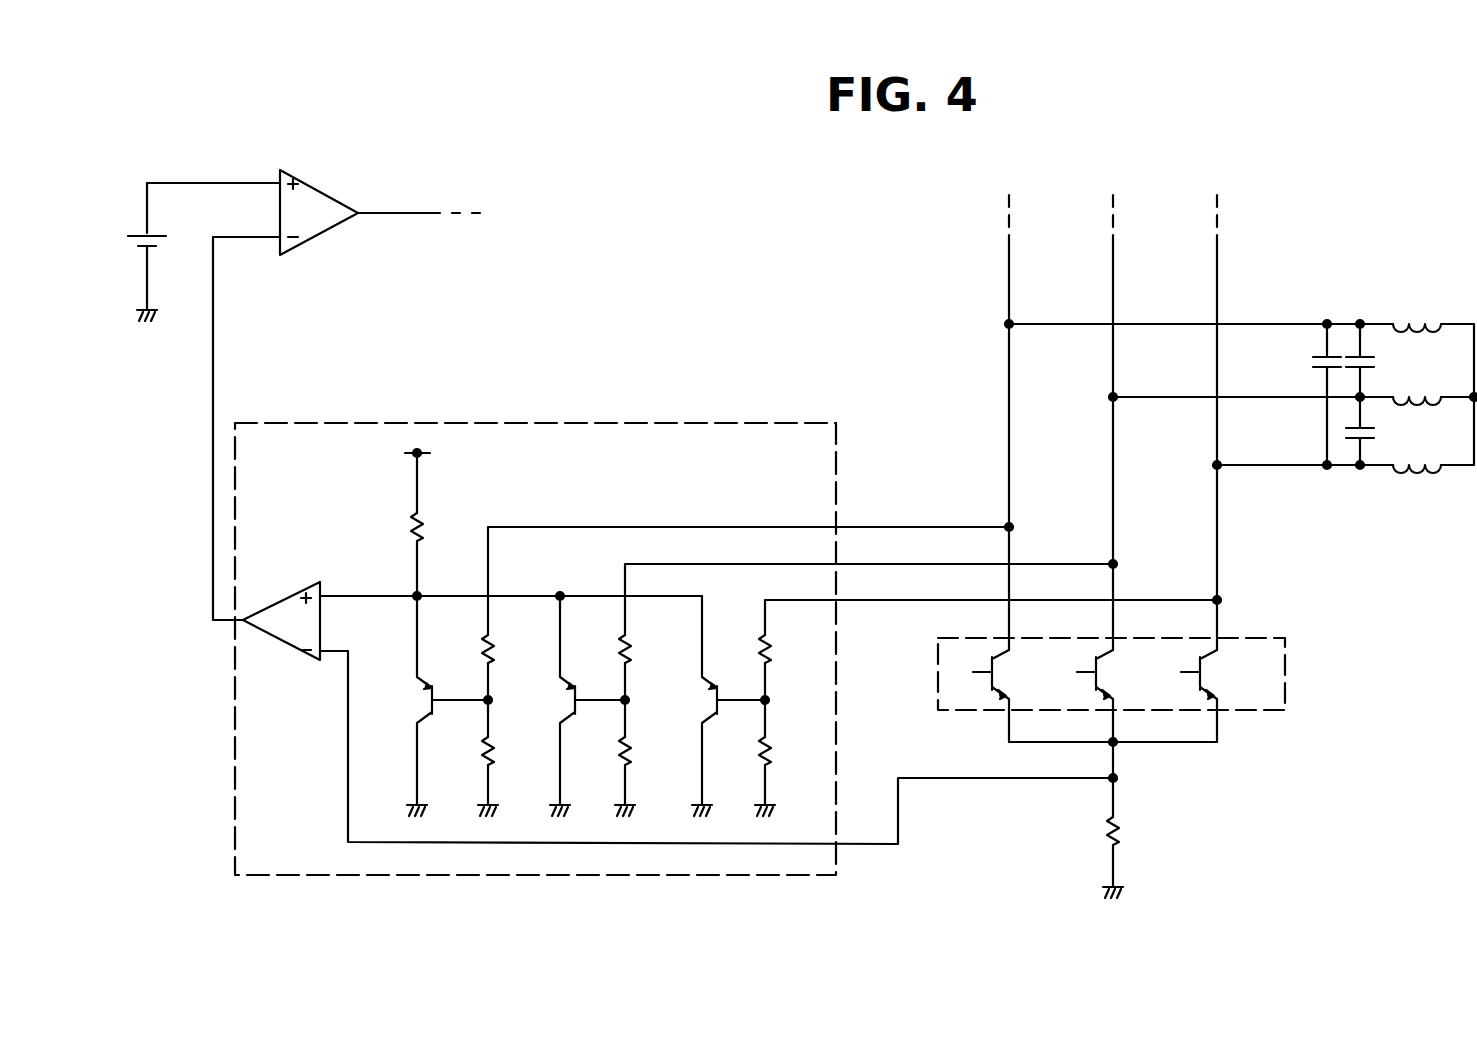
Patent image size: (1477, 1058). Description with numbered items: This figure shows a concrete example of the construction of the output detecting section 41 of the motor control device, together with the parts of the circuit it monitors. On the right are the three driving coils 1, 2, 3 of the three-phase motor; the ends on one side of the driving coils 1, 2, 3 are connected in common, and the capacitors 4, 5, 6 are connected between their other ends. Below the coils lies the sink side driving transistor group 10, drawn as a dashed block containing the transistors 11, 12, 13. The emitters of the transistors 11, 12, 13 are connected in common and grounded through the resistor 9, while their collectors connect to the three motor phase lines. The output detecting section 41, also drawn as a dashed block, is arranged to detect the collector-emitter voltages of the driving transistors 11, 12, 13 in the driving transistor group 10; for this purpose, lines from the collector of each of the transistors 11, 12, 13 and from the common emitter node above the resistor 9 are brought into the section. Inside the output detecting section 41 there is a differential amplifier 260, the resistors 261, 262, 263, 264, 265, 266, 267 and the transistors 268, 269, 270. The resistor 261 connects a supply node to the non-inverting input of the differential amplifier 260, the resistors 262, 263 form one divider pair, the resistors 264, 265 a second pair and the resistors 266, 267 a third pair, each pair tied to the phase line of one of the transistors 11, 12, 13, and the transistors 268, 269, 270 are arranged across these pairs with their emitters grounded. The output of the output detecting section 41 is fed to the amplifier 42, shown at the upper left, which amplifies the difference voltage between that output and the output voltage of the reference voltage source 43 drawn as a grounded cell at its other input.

The driving coil 1 is at (1416, 314).
The driving coil 2 is at (1422, 391).
The driving coil 3 is at (1422, 462).
The capacitor 4 is at (1373, 365).
The capacitor 5 is at (1374, 434).
The capacitor 6 is at (1310, 362).
The resistor 9 is at (1106, 828).
The sink side driving transistor group 10 is at (1285, 688).
The transistor 11 is at (1004, 680).
The transistor 12 is at (1110, 680).
The transistor 13 is at (1215, 680).
The output detecting section 41 is at (625, 423).
The amplifier 42 is at (322, 186).
The reference voltage source 43 is at (166, 238).
The differential amplifier 260 is at (283, 600).
The resistor 261 is at (425, 524).
The resistor 262 is at (515, 634).
The resistor 263 is at (494, 746).
The resistor 264 is at (631, 653).
The resistor 265 is at (631, 746).
The resistor 266 is at (772, 648).
The resistor 267 is at (772, 746).
The transistor 268 is at (413, 698).
The transistor 269 is at (562, 706).
The transistor 270 is at (700, 708).